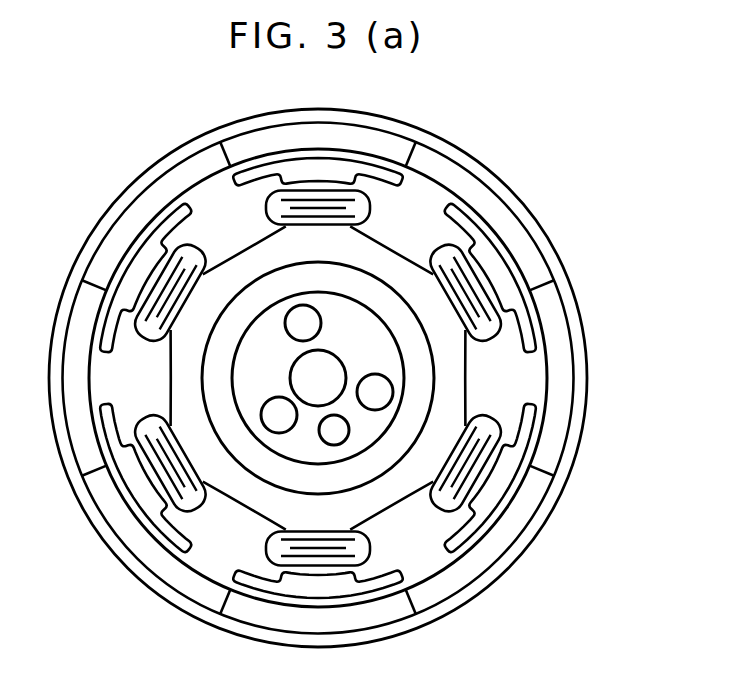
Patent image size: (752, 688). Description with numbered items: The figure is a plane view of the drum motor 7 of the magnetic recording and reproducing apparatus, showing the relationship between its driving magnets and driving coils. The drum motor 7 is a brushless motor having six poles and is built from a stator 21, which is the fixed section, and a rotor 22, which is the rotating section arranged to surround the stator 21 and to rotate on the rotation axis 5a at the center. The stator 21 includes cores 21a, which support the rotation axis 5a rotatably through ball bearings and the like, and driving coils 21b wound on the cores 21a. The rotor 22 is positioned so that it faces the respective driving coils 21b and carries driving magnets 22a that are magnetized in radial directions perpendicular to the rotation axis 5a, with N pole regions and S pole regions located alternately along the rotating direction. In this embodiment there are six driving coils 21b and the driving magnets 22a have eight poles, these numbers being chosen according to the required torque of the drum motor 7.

The drum motor 7 is at (95, 154).
The rotation axis 5a is at (267, 305).
The stator 21 is at (233, 512).
The core 21a is at (500, 280).
The driving coil 21b is at (493, 407).
The rotor 22 is at (513, 565).
The driving magnet 22a is at (475, 186).